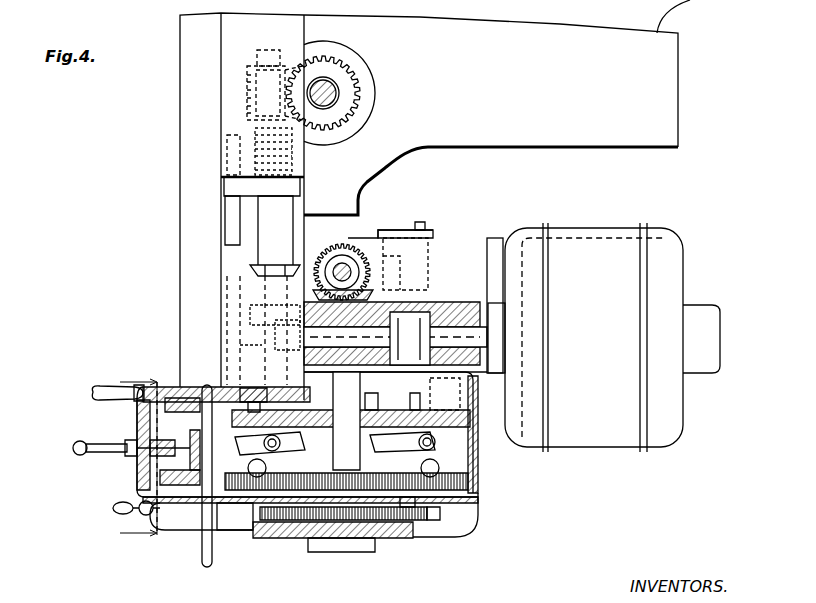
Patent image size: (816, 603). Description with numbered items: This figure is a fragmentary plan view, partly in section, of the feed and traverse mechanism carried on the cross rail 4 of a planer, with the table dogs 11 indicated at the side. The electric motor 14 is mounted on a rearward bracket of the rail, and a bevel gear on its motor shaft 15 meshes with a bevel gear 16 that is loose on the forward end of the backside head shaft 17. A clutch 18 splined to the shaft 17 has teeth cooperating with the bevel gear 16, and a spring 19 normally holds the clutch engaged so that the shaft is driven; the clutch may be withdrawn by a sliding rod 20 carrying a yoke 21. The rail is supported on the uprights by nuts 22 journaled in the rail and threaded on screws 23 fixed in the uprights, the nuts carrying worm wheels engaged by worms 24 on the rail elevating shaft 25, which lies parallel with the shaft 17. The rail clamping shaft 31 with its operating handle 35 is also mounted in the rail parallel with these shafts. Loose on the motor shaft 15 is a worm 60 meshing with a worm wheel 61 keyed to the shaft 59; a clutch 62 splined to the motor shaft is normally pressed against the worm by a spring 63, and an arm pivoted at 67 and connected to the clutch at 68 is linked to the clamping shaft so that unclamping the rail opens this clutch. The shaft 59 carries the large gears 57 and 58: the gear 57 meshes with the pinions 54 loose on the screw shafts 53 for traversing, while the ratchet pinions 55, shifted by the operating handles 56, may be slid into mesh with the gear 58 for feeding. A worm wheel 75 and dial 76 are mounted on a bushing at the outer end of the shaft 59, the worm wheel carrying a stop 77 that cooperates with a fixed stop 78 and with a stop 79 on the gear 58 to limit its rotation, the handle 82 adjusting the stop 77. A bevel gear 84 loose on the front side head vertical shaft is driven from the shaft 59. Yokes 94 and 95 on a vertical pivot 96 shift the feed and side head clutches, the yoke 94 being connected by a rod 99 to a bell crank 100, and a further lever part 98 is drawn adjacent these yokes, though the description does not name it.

The cross rail 4 is at (180, 28).
The table dogs 11 is at (131, 455).
The electric motor 14 is at (610, 232).
The motor shaft 15 is at (462, 330).
The bevel gear 16 is at (252, 312).
The backside head shaft 17 is at (250, 130).
The clutch 18 is at (262, 245).
The spring 19 is at (226, 182).
The sliding rod 20 is at (258, 194).
The yoke 21 is at (226, 214).
The nuts 22 is at (330, 68).
The screws 23 is at (336, 100).
The worms 24 is at (245, 87).
The rail elevating shaft 25 is at (258, 56).
The rail clamping shaft 31 is at (240, 350).
The operating handle 35 is at (90, 390).
The screw shafts 53 is at (202, 550).
The pinion 54 is at (172, 395).
The ratchet pinion 55 is at (170, 460).
The operating handles 56 is at (145, 440).
The gear 57 is at (478, 430).
The gear 58 is at (458, 485).
The shaft 59 is at (340, 552).
The worm 60 is at (310, 373).
The worm wheel 61 is at (285, 337).
The clutch 62 is at (410, 310).
The spring 63 is at (432, 310).
The pivot 67 is at (420, 386).
The connection 68 is at (410, 375).
The worm wheel 75 is at (423, 517).
The dial 76 is at (290, 540).
The stop 77 is at (250, 515).
The fixed stop 78 is at (427, 507).
The stop 79 is at (407, 503).
The handle 82 is at (113, 508).
The bevel gear 84 is at (336, 245).
The yoke 94 is at (165, 480).
The yoke 95 is at (150, 415).
The vertical pivot 96 is at (322, 420).
The lever 98 is at (468, 440).
The rod 99 is at (430, 252).
The bell crank 100 is at (408, 230).